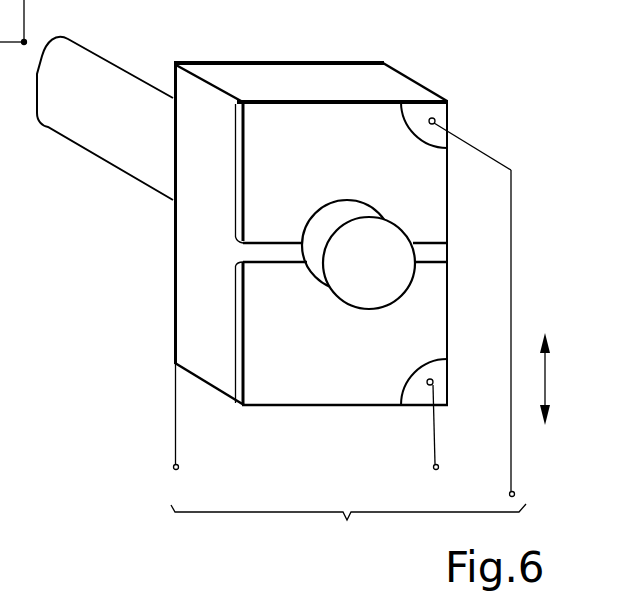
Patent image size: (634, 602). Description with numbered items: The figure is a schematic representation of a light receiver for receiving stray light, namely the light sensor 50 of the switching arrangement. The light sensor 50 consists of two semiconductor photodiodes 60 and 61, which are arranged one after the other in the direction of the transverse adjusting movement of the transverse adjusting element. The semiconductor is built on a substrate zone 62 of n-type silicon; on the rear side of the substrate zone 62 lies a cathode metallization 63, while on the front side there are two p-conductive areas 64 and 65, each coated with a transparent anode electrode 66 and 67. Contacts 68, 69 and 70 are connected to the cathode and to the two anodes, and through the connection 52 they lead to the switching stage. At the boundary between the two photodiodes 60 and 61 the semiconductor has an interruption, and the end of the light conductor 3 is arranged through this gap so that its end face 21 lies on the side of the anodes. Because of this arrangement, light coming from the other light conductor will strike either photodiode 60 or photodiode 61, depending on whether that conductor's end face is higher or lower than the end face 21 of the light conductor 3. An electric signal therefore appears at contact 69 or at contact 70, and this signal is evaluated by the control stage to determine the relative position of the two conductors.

The light conductor 3 is at (111, 150).
The end face 21 is at (379, 284).
The light sensor 50 is at (421, 86).
The connection 52 is at (27, 52).
The photodiode 60 is at (447, 180).
The photodiode 61 is at (449, 314).
The substrate zone 62 is at (212, 218).
The cathode metallization 63 is at (175, 283).
The p-conductive area 64 is at (243, 148).
The p-conductive area 65 is at (240, 345).
The transparent anode electrode 66 is at (273, 118).
The transparent anode electrode 67 is at (284, 377).
The contact 68 is at (178, 434).
The contact 69 is at (474, 314).
The contact 70 is at (440, 445).